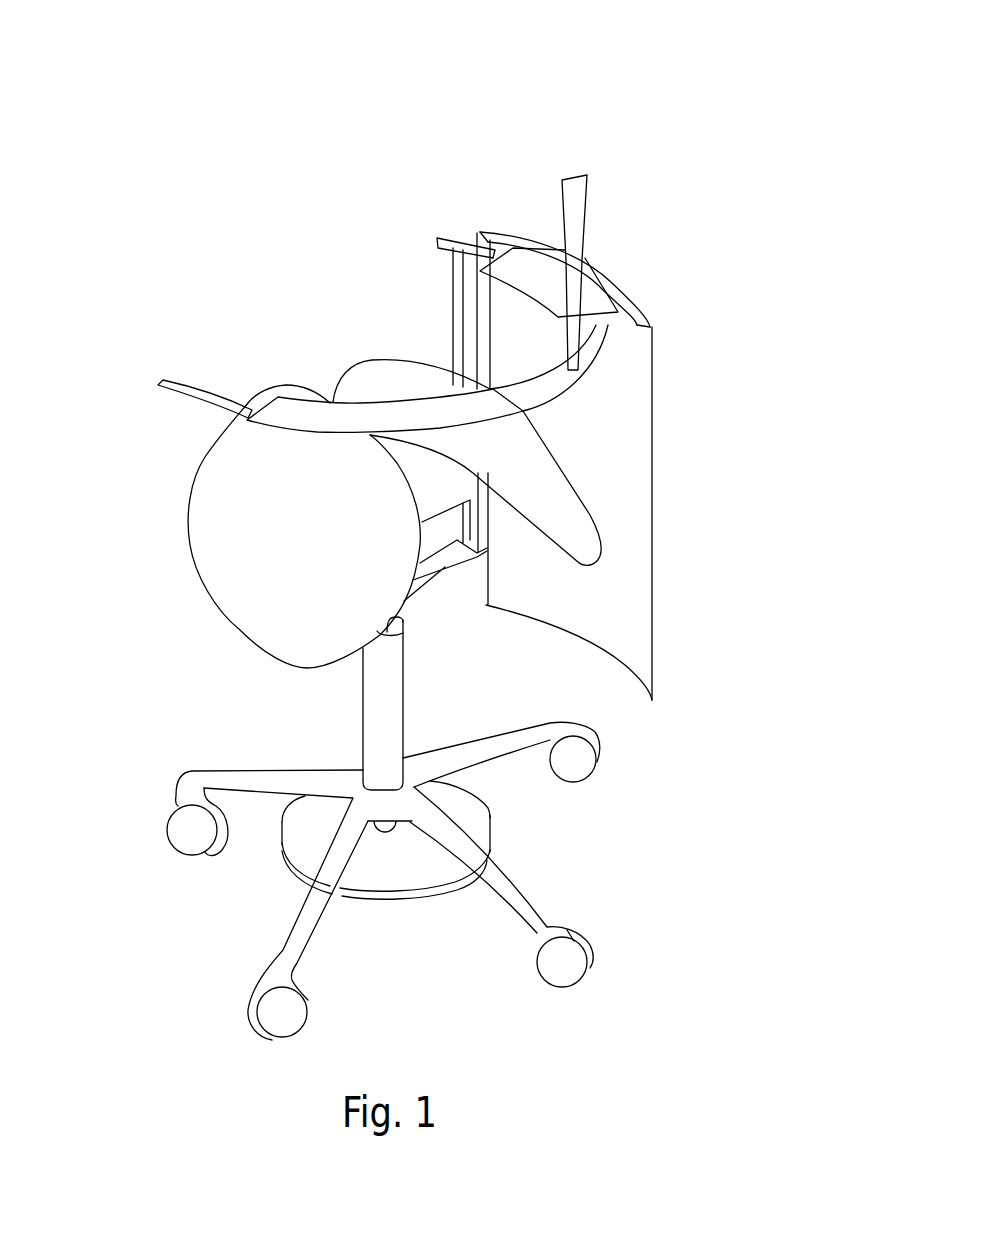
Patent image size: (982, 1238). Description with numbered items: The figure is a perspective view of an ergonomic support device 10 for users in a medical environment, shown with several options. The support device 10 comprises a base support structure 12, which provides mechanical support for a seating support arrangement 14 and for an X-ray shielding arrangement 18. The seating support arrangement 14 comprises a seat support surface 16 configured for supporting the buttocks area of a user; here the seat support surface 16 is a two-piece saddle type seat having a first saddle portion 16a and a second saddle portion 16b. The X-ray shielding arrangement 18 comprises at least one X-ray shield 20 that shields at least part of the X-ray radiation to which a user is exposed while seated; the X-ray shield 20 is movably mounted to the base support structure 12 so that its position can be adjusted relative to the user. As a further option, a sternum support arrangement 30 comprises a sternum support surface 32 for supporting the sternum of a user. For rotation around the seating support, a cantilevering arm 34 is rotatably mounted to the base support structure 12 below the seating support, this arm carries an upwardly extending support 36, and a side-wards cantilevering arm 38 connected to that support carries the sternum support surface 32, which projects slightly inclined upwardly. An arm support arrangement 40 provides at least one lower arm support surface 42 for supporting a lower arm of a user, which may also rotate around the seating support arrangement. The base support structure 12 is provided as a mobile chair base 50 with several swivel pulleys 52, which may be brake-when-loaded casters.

The ergonomic support device 10 is at (519, 124).
The base support structure 12 is at (373, 722).
The seating support arrangement 14 is at (330, 308).
The seat support surface 16 is at (392, 380).
The first saddle portion 16a is at (240, 600).
The second saddle portion 16b is at (570, 528).
The X-ray shielding arrangement 18 is at (668, 343).
The X-ray shield 20 is at (650, 458).
The sternum support arrangement 30 is at (602, 198).
The sternum support surface 32 is at (577, 177).
The cantilevering arm 34 is at (433, 580).
The upwardly extending support 36 is at (457, 283).
The side-wards cantilevering arm 38 is at (492, 248).
The arm support arrangement 40 is at (172, 418).
The lower arm support surface 42 is at (290, 417).
The mobile chair base 50 is at (236, 892).
The swivel pulleys 52 is at (293, 1017).